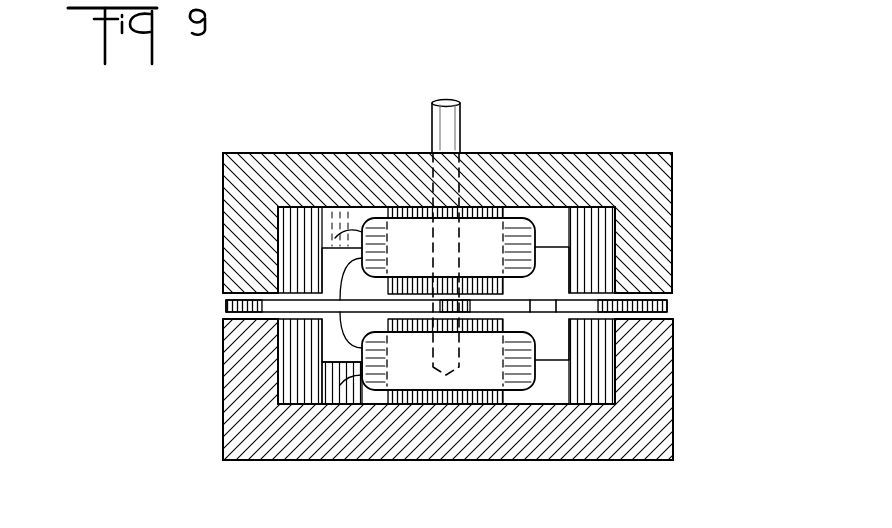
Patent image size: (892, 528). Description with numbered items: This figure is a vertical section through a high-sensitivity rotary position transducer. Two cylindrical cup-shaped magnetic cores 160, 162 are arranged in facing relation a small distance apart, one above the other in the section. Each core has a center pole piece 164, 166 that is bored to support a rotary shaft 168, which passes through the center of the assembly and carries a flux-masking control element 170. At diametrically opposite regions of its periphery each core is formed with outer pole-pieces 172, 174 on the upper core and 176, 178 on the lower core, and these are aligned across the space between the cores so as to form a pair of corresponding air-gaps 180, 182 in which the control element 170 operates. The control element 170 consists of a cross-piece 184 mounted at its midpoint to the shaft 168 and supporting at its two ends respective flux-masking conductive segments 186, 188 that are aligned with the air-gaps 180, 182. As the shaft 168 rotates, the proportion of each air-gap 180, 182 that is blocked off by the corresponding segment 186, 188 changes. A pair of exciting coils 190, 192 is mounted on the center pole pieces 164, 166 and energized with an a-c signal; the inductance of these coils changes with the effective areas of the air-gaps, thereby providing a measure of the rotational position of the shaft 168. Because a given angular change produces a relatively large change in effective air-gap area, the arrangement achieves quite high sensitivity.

The magnetic core 160 is at (648, 143).
The magnetic core 162 is at (644, 464).
The center pole piece 164 is at (485, 207).
The center pole piece 166 is at (478, 400).
The rotary shaft 168 is at (438, 119).
The flux-masking control element 170 is at (543, 317).
The outer pole-piece 172 is at (246, 263).
The outer pole-piece 174 is at (646, 276).
The outer pole-piece 176 is at (249, 351).
The outer pole-piece 178 is at (646, 340).
The air-gap 180 is at (234, 315).
The air-gap 182 is at (664, 294).
The cross-piece 184 is at (510, 303).
The flux-masking segment 186 is at (320, 361).
The flux-masking segment 188 is at (575, 361).
The exciting coil 190 is at (378, 222).
The exciting coil 192 is at (380, 387).